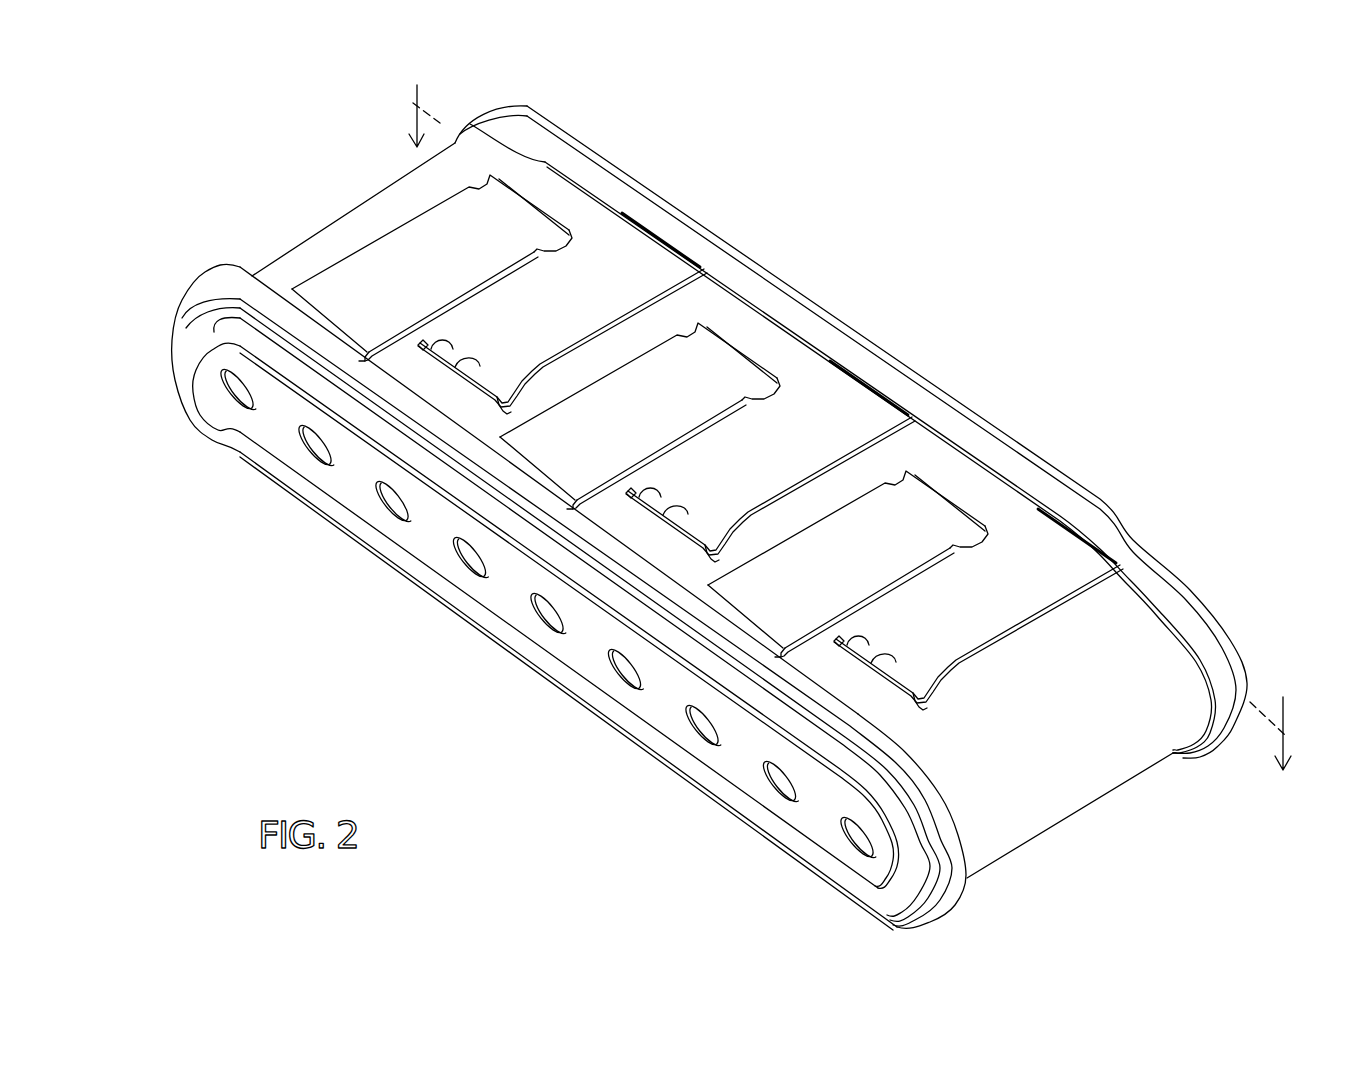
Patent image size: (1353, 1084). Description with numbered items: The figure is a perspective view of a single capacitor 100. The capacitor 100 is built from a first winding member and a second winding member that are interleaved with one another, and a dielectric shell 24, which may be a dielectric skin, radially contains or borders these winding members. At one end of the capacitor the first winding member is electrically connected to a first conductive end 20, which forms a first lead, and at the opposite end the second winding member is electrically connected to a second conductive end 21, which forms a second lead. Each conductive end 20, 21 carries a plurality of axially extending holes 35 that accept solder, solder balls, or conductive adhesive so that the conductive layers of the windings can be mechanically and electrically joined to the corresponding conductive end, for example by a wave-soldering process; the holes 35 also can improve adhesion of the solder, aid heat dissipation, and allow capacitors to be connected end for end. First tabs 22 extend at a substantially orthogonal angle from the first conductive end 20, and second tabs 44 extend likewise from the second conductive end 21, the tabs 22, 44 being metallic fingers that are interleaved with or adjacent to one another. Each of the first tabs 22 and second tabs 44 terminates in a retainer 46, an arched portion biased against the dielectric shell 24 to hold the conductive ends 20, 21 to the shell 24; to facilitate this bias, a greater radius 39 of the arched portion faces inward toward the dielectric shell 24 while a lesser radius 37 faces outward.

The capacitor 100 is at (348, 233).
The first conductive end 20 is at (182, 311).
The second conductive end 21 is at (1093, 528).
The first tabs 22 is at (395, 291).
The dielectric shell 24 is at (1020, 693).
The holes 35 is at (857, 850).
The lesser radius 37 is at (527, 220).
The greater radius 39 is at (568, 250).
The second tabs 44 is at (625, 278).
The retainer 46 is at (503, 203).